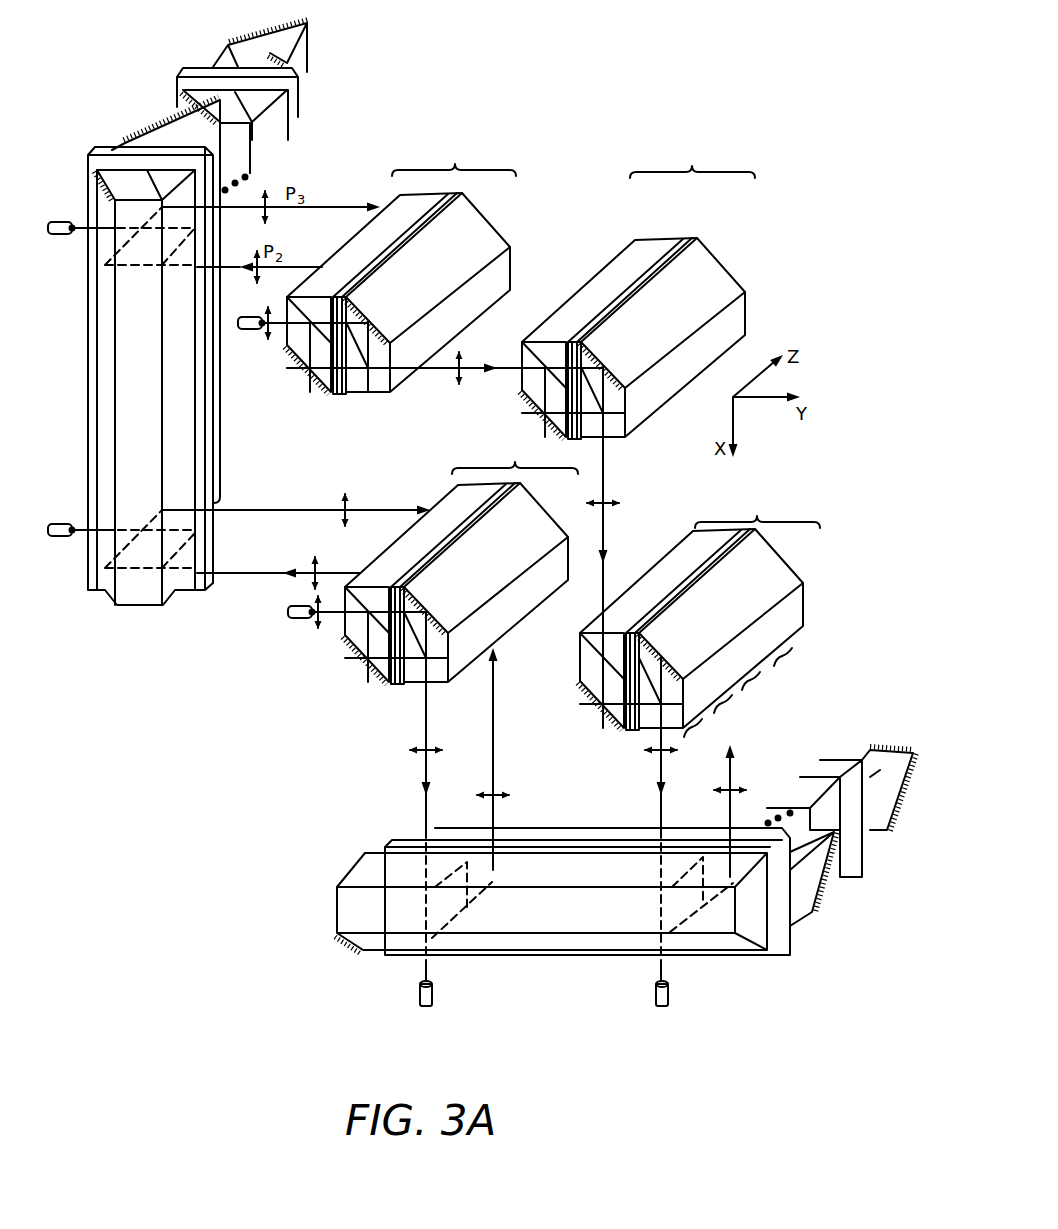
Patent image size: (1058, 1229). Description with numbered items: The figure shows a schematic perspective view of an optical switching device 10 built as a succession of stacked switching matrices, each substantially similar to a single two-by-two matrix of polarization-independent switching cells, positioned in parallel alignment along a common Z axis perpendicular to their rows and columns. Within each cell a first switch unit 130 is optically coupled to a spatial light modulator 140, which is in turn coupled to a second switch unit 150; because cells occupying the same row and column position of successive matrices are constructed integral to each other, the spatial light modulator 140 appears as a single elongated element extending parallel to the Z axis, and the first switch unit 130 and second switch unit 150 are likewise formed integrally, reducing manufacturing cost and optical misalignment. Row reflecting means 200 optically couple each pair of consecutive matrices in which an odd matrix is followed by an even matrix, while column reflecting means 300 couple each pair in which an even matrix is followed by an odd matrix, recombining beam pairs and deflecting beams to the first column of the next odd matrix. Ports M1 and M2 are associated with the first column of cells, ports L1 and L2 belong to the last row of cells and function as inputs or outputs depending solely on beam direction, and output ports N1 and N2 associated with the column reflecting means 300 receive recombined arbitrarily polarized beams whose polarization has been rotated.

The optical switching device 10 is at (548, 159).
The first switch unit 130 is at (571, 335).
The spatial light modulator 140 is at (640, 317).
The second switch unit 150 is at (656, 337).
The column reflecting means 300 is at (360, 78).
The row reflecting means 200 is at (579, 975).
The output port N1 is at (62, 215).
The output port N2 is at (62, 518).
The port M1 is at (249, 341).
The port M2 is at (303, 631).
The port L1 is at (440, 997).
The port L2 is at (677, 997).